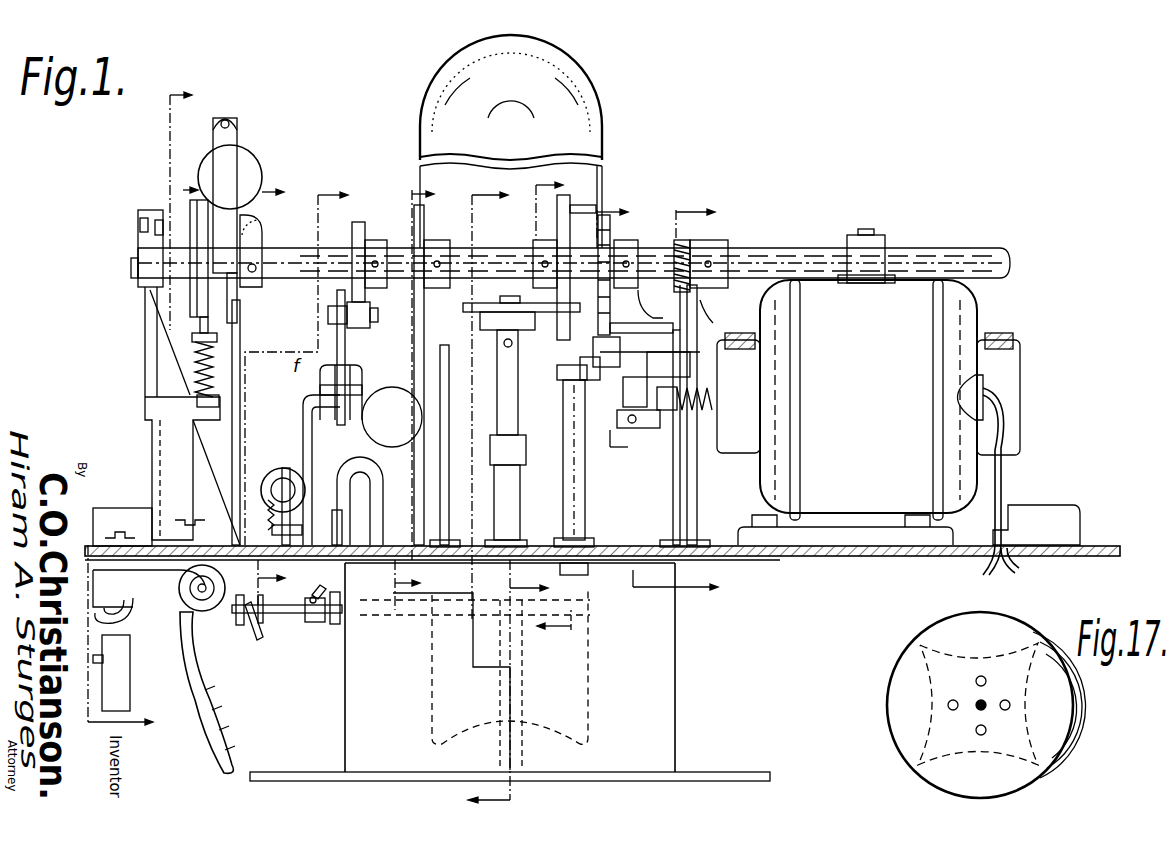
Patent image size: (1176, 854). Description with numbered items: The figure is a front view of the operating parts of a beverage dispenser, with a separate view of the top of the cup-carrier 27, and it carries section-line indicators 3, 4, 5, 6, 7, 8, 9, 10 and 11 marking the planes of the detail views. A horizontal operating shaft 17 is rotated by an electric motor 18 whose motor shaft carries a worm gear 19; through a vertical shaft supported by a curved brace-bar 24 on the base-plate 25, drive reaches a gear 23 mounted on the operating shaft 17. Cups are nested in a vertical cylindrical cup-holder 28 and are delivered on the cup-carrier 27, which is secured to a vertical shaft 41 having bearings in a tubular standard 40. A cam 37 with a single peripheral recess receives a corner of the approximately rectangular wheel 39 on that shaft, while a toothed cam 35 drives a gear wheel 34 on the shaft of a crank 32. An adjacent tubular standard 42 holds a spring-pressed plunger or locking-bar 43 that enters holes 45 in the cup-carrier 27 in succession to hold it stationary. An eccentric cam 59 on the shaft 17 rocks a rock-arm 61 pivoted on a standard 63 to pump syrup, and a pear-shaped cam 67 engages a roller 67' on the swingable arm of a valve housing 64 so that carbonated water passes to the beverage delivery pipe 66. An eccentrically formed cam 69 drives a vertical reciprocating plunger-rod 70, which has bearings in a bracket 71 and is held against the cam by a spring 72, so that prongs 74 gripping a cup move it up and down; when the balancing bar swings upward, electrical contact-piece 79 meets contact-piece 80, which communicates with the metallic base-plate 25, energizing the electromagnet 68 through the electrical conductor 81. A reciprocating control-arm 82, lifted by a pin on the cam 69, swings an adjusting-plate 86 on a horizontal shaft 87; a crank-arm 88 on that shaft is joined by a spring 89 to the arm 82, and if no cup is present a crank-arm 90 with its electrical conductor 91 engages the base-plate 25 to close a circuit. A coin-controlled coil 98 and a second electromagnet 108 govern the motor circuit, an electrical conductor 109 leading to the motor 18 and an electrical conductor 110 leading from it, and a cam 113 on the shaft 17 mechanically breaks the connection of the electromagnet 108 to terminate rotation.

In FIG. 1, the section line 3- 3 is at (683, 401).
In FIG. 1, the section line 4-4 / bracket 4 is at (628, 330).
In FIG. 1, the section line 5- 5 is at (544, 406).
In FIG. 1, the section line 6- 6 is at (516, 402).
In FIG. 1, the section line 7- 7 is at (420, 396).
In FIG. 1, the section line 8- 8 is at (304, 394).
In FIG. 1, the section line 9- 9 is at (340, 496).
In FIG. 1, the section line 10- 10 is at (198, 458).
In FIG. 1, the section line 11- 11 is at (194, 206).
In FIG. 1, the horizontal operating shaft 17 is at (952, 252).
In FIG. 1, the electric motor 18 is at (965, 312).
In FIG. 1, the worm gear 19 is at (705, 405).
In FIG. 1, the gear 23 is at (690, 243).
In FIG. 1, the curved brace-bar 24 is at (715, 480).
In FIG. 1, the base-plate 25 is at (812, 556).
In FIG. 1, the cup-carrier 27 is at (668, 742).
In FIG. 17, the cup-carrier 27 is at (1062, 742).
In FIG. 1, the cup-holder 28 is at (420, 138).
In FIG. 1, the crank 32 is at (678, 415).
In FIG. 1, the gear wheel 34 is at (640, 323).
In FIG. 1, the cam 35 is at (610, 232).
In FIG. 1, the cam 37 is at (556, 222).
In FIG. 1, the wheel 39 is at (500, 303).
In FIG. 1, the tubular standard 40 is at (524, 478).
In FIG. 1, the vertical shaft 41 is at (518, 420).
In FIG. 17, the vertical shaft 41 is at (976, 710).
In FIG. 1, the tubular standard 42 is at (585, 435).
In FIG. 1, the plunger or locking-bar 43 is at (578, 572).
In FIG. 17, the holes 45 is at (953, 700).
In FIG. 1, the eccentric cam 59 is at (424, 225).
In FIG. 1, the rock-arm 61 is at (420, 408).
In FIG. 1, the standard 63 is at (449, 460).
In FIG. 1, the valve housing 64 is at (358, 392).
In FIG. 1, the beverage delivery pipe 66 is at (390, 525).
In FIG. 1, the cam 67 is at (374, 250).
In FIG. 1, the roller 67' is at (357, 357).
In FIG. 1, the electromagnet 68 is at (283, 468).
In FIG. 1, the eccentrically formed cam 69 is at (200, 210).
In FIG. 1, the plunger-rod 70 is at (215, 395).
In FIG. 1, the bracket 71 is at (150, 432).
In FIG. 1, the spring 72 is at (197, 368).
In FIG. 1, the prongs 74 is at (240, 720).
In FIG. 1, the electrical contact-piece 79 is at (178, 595).
In FIG. 1, the electrical contact-piece 80 is at (118, 540).
In FIG. 1, the electrical conductor 81 is at (132, 615).
In FIG. 1, the reciprocating control-arm 82 is at (240, 338).
In FIG. 1, the adjusting-plate 86 is at (440, 688).
In FIG. 1, the horizontal shaft 87 is at (290, 620).
In FIG. 1, the crank-arm 88 is at (253, 630).
In FIG. 1, the spring 89 is at (238, 625).
In FIG. 1, the crank-arm 90 is at (315, 622).
In FIG. 1, the electrical conductor 91 is at (320, 585).
In FIG. 1, the coil of electromagnet 98 is at (260, 160).
In FIG. 1, the second electromagnet 108 is at (272, 225).
In FIG. 1, the electrical conductor 109 is at (978, 575).
In FIG. 1, the electrical conductor 110 is at (1020, 575).
In FIG. 1, the cam 113 is at (150, 243).